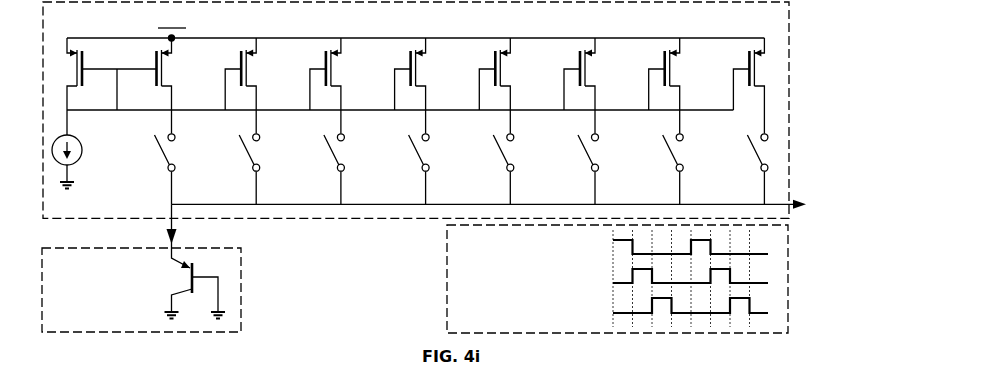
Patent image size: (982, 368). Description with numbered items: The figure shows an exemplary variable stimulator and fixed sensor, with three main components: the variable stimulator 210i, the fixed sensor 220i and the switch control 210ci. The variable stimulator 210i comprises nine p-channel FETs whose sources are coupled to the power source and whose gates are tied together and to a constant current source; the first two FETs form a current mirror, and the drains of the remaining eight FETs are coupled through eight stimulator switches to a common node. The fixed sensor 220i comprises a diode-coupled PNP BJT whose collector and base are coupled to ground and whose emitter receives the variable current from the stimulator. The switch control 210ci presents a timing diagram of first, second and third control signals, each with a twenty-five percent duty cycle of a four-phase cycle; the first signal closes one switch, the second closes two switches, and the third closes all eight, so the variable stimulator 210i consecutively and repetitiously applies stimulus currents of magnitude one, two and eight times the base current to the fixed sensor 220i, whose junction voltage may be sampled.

The variable stimulator 210i is at (776, 24).
The fixed sensor 220i is at (92, 281).
The switch control 210ci is at (512, 322).